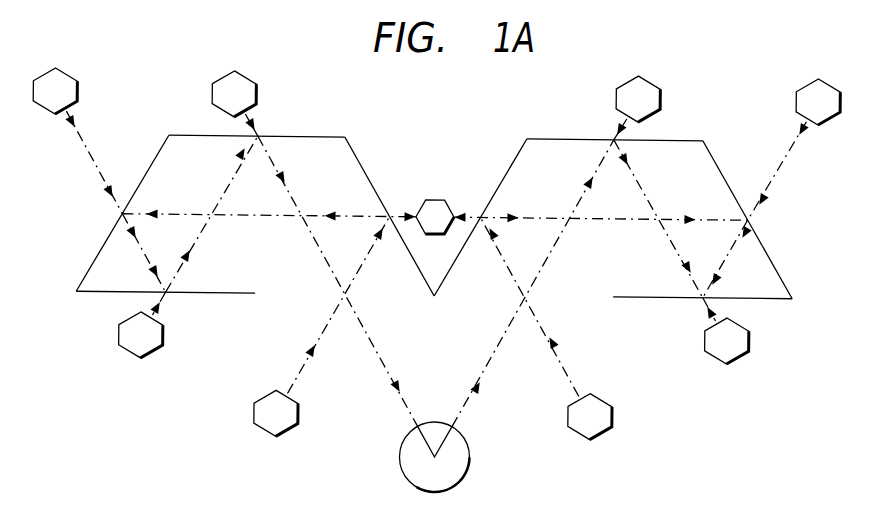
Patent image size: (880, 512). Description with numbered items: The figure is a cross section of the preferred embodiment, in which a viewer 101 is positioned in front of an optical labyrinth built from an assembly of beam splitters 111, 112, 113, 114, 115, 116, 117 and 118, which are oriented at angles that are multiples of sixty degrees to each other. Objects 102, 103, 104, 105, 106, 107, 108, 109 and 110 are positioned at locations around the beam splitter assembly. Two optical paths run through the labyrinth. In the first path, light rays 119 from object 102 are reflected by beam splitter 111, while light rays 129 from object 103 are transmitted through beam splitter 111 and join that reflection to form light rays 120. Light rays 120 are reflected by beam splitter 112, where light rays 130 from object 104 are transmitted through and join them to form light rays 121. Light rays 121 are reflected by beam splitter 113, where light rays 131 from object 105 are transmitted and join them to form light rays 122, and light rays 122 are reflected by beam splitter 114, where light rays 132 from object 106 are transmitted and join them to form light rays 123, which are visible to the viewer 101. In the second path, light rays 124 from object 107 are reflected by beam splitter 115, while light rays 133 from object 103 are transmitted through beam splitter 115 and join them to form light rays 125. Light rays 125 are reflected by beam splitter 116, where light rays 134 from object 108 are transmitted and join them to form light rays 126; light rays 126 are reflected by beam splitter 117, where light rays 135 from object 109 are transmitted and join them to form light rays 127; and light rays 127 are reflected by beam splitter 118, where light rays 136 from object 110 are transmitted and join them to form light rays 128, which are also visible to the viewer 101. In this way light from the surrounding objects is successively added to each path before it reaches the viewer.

The viewer 101 is at (402, 462).
The object 102 is at (613, 406).
The object 103 is at (443, 199).
The object 104 is at (819, 77).
The object 105 is at (749, 349).
The object 106 is at (638, 75).
The object 107 is at (258, 405).
The object 108 is at (74, 86).
The object 109 is at (121, 349).
The object 110 is at (256, 86).
The beam splitter 111 is at (516, 154).
The beam splitter 112 is at (771, 258).
The beam splitter 113 is at (622, 297).
The beam splitter 114 is at (674, 137).
The beam splitter 115 is at (358, 158).
The beam splitter 116 is at (161, 150).
The beam splitter 117 is at (240, 297).
The beam splitter 118 is at (334, 137).
The light rays 119 is at (555, 325).
The light rays 120 is at (712, 216).
The light rays 121 is at (725, 260).
The light rays 122 is at (677, 252).
The light rays 123 is at (559, 231).
The light rays 124 is at (304, 372).
The light rays 125 is at (362, 216).
The light rays 126 is at (141, 251).
The light rays 127 is at (208, 226).
The light rays 128 is at (334, 273).
The light rays 129 is at (467, 213).
The light rays 130 is at (776, 170).
The light rays 131 is at (708, 314).
The light rays 132 is at (613, 134).
The light rays 133 is at (410, 212).
The light rays 134 is at (92, 170).
The light rays 135 is at (170, 302).
The light rays 136 is at (260, 134).